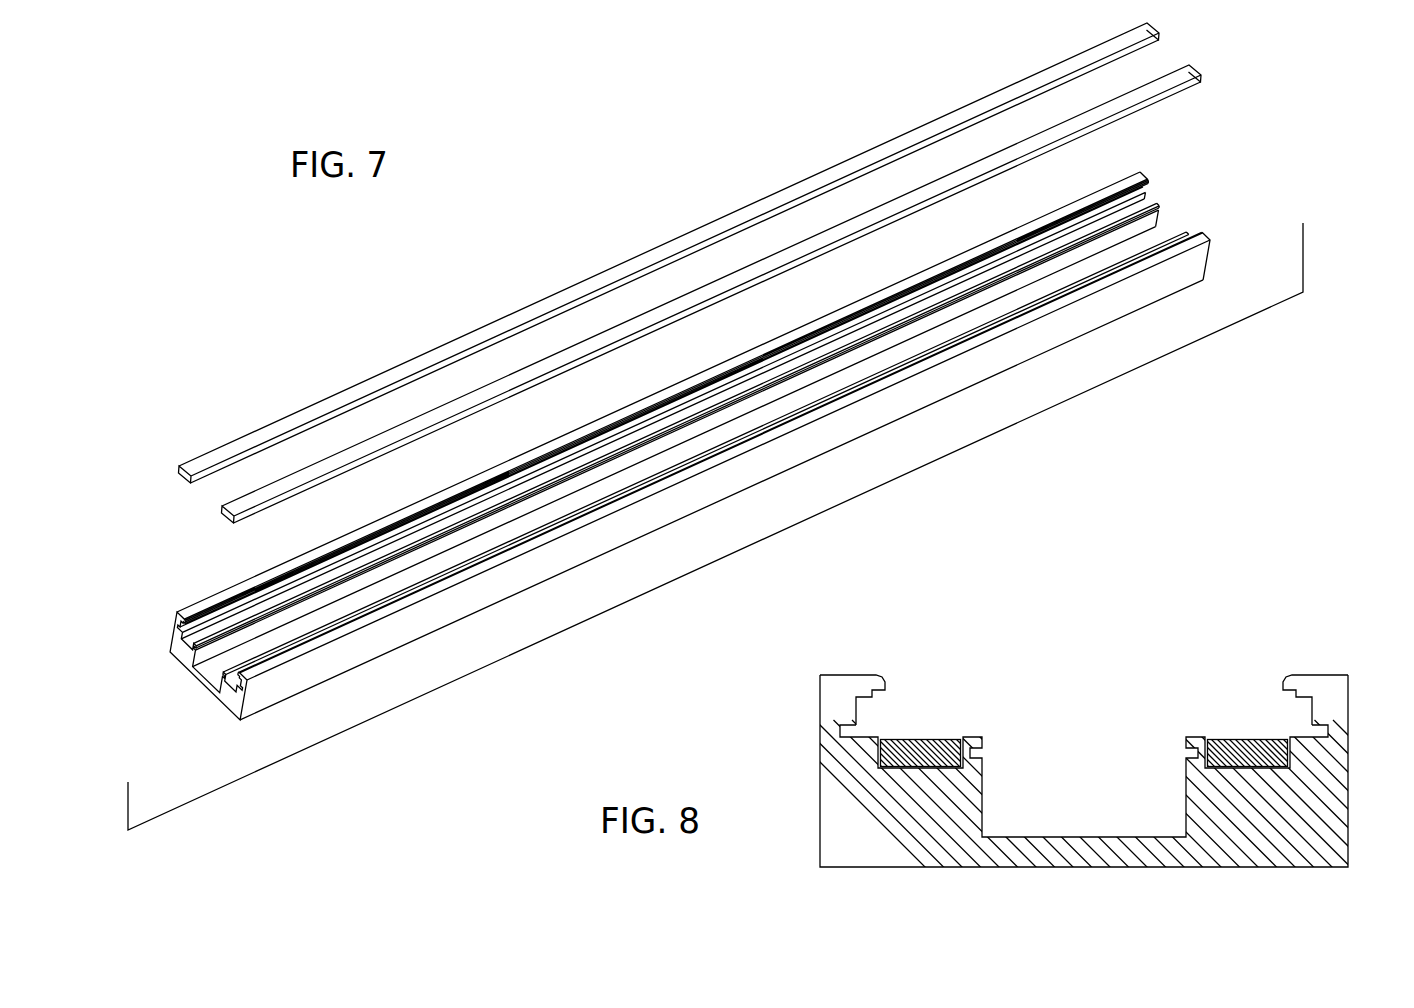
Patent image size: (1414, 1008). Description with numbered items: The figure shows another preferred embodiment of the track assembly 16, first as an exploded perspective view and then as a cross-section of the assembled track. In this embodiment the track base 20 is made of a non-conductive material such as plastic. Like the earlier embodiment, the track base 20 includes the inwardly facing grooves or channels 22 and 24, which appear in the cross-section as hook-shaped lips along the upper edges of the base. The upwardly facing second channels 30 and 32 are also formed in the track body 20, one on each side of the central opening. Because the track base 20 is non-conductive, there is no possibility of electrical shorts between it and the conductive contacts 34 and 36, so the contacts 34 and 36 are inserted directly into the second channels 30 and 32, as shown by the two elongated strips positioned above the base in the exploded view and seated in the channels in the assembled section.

In FIG. 7, the track assembly 16 is at (709, 501).
In FIG. 8, the track assembly 16 is at (1333, 635).
In FIG. 8, the track base 20 is at (830, 792).
In FIG. 8, the inwardly facing groove or channel 22 is at (862, 720).
In FIG. 8, the inwardly facing groove or channel 24 is at (1318, 725).
In FIG. 7, the upwardly facing second channel 30 is at (182, 652).
In FIG. 7, the upwardly facing second channel 32 is at (228, 683).
In FIG. 7, the conductive contact 34 is at (330, 407).
In FIG. 8, the conductive contact 34 is at (932, 738).
In FIG. 7, the conductive contact 36 is at (440, 417).
In FIG. 8, the conductive contact 36 is at (1240, 738).